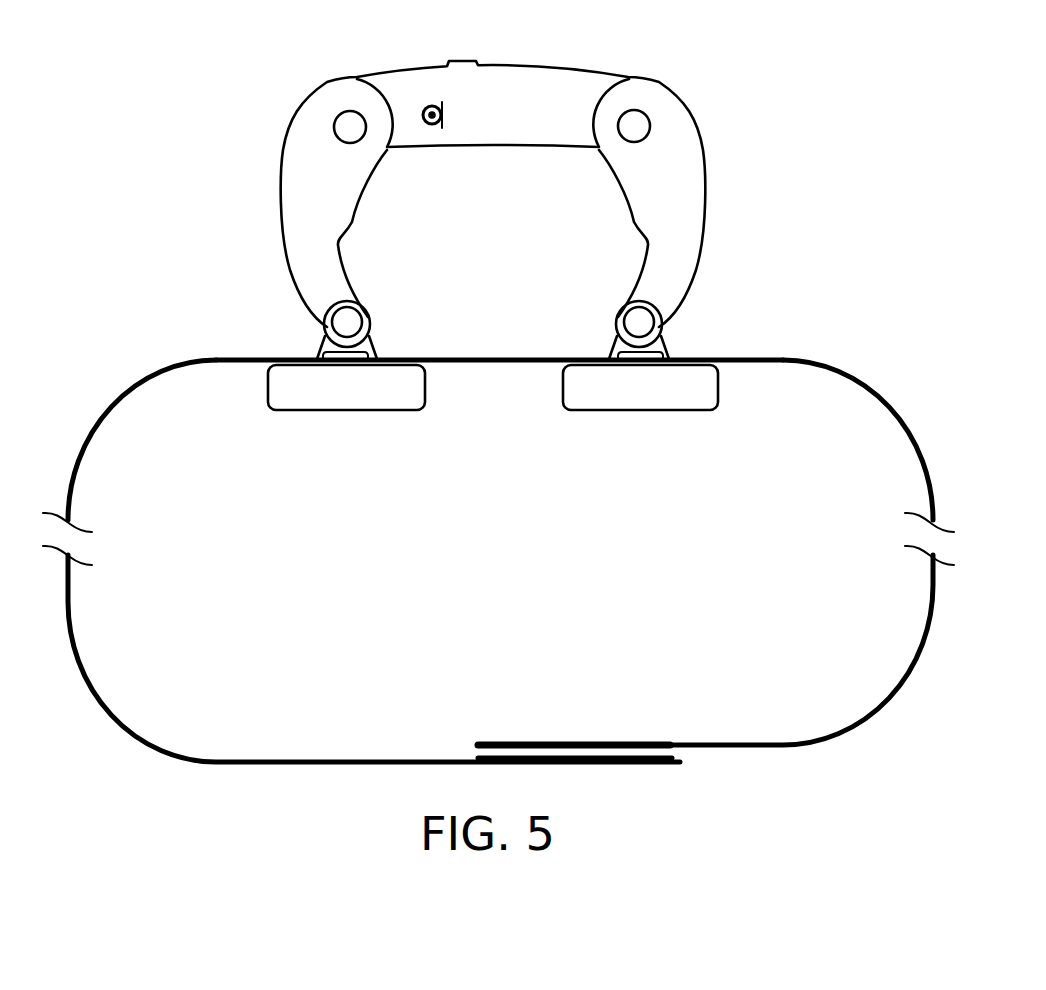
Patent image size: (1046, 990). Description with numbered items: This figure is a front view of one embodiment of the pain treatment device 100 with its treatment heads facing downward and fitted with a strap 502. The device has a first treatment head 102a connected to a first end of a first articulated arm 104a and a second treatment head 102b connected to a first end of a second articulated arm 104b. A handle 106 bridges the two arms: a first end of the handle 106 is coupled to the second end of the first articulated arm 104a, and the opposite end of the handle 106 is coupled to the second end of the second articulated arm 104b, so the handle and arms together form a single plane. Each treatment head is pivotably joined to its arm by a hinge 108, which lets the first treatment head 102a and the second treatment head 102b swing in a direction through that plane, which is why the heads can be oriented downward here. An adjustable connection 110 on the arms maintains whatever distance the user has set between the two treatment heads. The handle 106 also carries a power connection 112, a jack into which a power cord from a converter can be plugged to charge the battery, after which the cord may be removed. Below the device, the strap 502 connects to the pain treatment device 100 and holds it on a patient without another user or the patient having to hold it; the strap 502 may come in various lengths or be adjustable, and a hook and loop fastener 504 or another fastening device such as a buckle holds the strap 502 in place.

The pain treatment device 100 is at (491, 208).
The first treatment head 102a is at (433, 358).
The second treatment head 102b is at (714, 358).
The first articulated arm 104a is at (339, 243).
The second articulated arm 104b is at (692, 264).
The handle 106 is at (508, 150).
The hinge 108 is at (326, 331).
The adjustable connection 110 is at (362, 139).
The power connection 112 is at (435, 124).
The strap 502 is at (131, 726).
The hook and loop fastener 504 is at (602, 714).